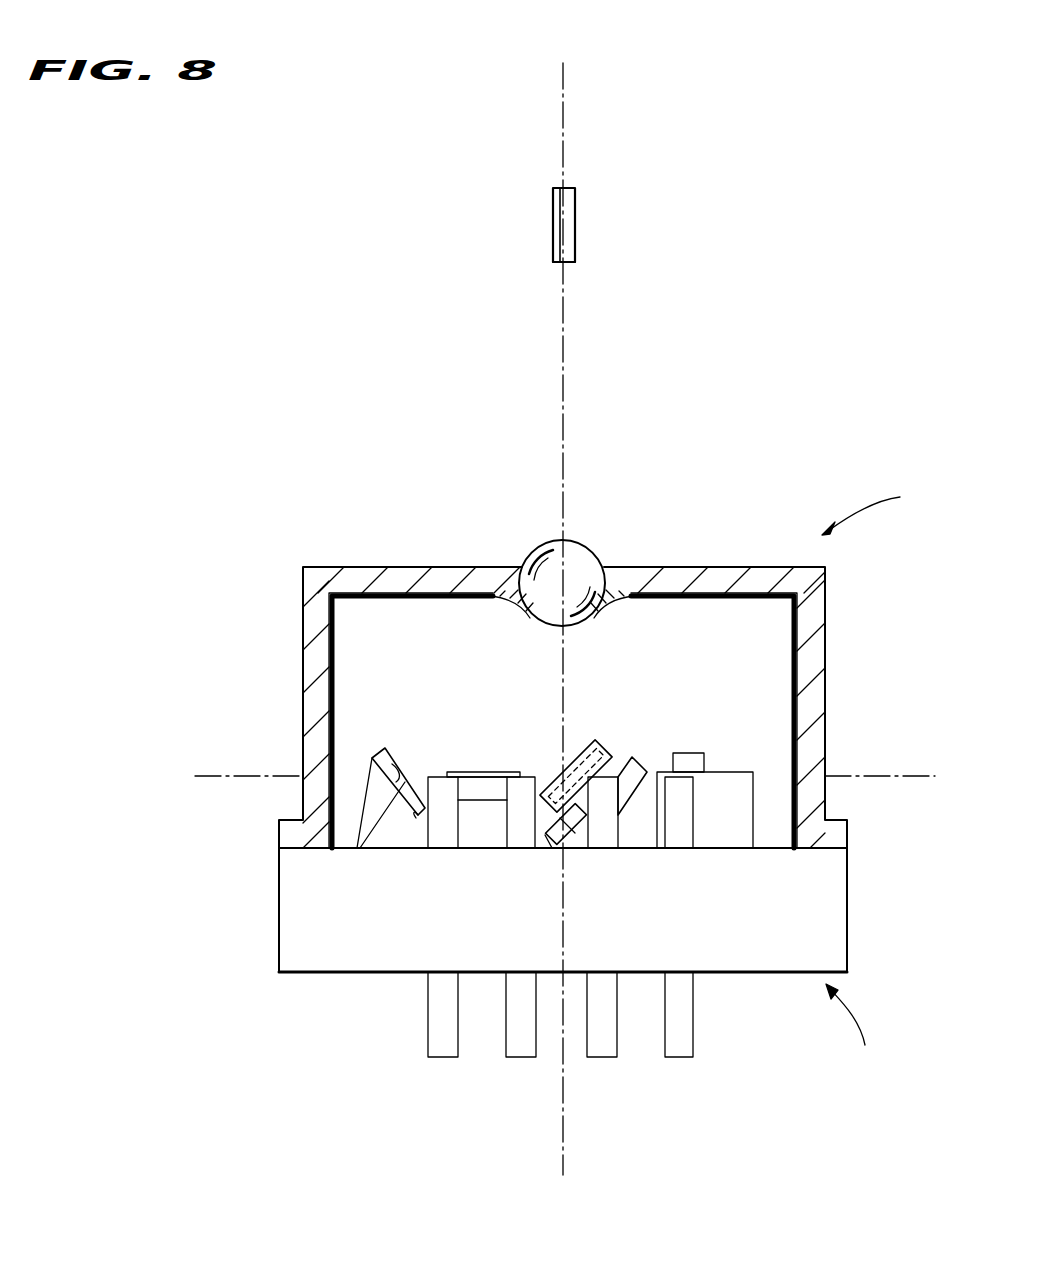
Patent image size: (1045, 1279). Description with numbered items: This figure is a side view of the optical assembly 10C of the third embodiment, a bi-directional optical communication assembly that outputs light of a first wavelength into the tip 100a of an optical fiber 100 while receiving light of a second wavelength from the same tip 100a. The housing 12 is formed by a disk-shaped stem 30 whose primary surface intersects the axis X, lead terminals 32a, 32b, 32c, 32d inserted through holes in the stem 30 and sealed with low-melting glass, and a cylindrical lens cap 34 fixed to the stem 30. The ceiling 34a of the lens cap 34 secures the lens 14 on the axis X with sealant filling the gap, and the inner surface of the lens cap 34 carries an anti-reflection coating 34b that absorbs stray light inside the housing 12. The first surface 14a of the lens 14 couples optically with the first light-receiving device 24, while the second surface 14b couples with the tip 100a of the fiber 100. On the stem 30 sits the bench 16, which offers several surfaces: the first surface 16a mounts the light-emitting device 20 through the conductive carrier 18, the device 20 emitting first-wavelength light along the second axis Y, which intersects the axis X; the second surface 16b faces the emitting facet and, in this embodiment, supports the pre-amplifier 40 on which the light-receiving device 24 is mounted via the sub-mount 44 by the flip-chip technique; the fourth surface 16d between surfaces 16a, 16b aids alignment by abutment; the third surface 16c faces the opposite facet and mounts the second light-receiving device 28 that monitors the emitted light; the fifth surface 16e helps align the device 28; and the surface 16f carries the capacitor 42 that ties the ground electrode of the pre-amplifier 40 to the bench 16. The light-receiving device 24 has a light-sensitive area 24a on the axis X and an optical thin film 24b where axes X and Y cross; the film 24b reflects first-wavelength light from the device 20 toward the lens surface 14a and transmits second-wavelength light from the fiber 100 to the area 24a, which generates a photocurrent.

The axis X is at (563, 137).
The second axis Y is at (880, 790).
The optical fiber 100 is at (568, 232).
The tip of the optical fiber 100a is at (565, 263).
The optical assembly 10C is at (885, 491).
The housing 12 is at (855, 1030).
The lens 14 is at (580, 552).
The first surface of the lens 14a is at (578, 628).
The second surface of the lens 14b is at (533, 548).
The bench 16 is at (727, 891).
The first surface 16a is at (483, 800).
The second surface 16b is at (588, 828).
The third surface 16c is at (357, 848).
The fourth surface 16d is at (553, 827).
The fifth surface 16e is at (418, 812).
The fourth surface of the bench 16f is at (722, 770).
The carrier 18 is at (465, 790).
The light-emitting device 20 is at (485, 775).
The first light-receiving device 24 is at (582, 745).
The first light-sensitive area 24a is at (577, 845).
The optical thin film 24b is at (562, 768).
The second light-receiving device 28 is at (390, 747).
The stem 30 is at (830, 920).
The lead terminal 32a is at (442, 1047).
The lead terminal 32b is at (518, 1048).
The ground lead terminal 32c is at (597, 1050).
The output lead terminal 32d is at (680, 1050).
The lens cap 34 is at (813, 700).
The ceiling of the lens cap 34a is at (613, 570).
The anti-reflection coating 34b is at (802, 614).
The pre-amplifier 40 is at (645, 777).
The capacitor 42 is at (690, 755).
The sub-mount 44 is at (621, 770).